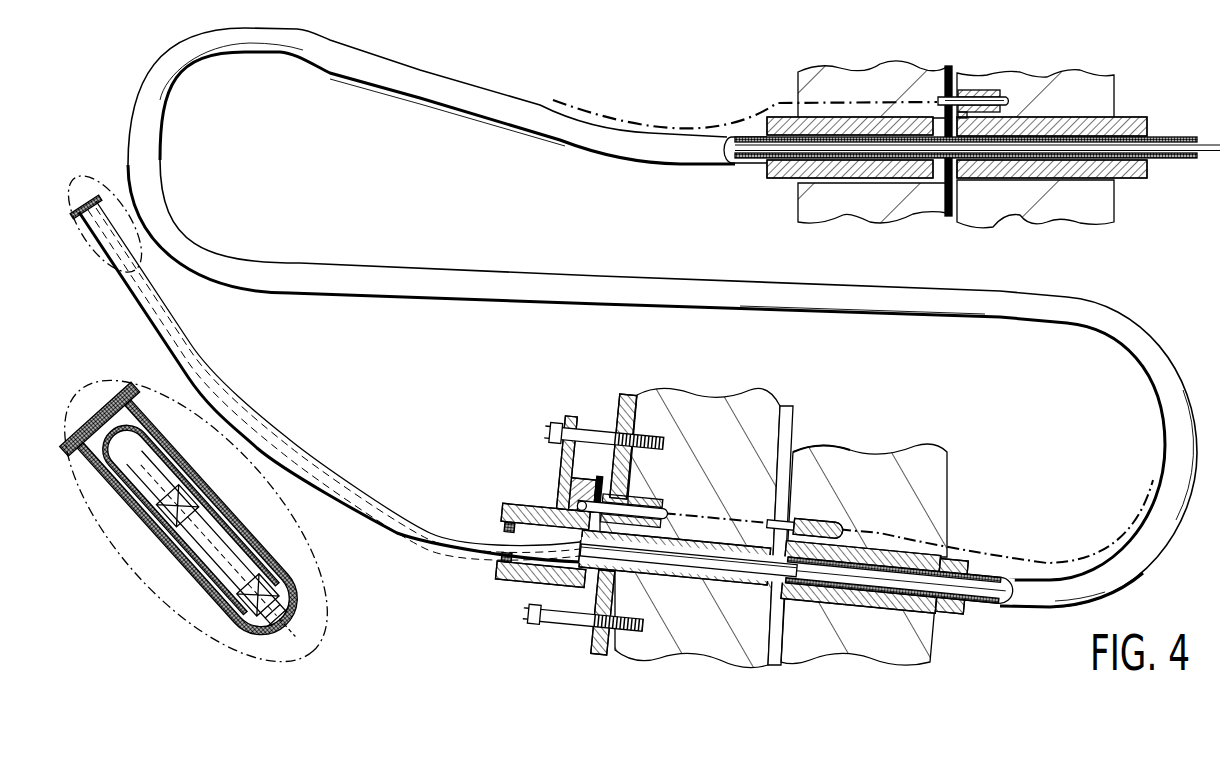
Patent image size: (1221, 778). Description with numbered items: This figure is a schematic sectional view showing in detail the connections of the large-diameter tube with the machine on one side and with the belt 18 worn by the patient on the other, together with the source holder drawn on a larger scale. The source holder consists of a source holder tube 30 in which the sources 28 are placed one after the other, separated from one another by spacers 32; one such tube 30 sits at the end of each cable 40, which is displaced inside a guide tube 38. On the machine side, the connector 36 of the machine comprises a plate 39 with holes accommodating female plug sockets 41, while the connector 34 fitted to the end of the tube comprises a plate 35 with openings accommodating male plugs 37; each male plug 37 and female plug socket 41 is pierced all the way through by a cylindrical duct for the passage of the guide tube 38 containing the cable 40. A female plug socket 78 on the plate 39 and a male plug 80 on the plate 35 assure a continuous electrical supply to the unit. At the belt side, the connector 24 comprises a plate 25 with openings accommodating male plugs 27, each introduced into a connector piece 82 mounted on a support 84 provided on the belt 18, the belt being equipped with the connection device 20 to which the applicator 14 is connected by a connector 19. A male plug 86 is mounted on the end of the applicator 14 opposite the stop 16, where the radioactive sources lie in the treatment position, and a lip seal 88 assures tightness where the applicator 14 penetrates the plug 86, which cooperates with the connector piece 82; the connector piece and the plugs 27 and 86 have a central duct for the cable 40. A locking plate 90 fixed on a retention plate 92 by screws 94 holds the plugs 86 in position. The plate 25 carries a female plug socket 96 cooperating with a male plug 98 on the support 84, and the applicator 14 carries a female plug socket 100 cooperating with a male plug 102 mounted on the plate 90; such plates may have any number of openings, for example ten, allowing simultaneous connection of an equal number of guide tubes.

The applicator 14 is at (240, 400).
The stop 16 is at (90, 195).
The belt 18 is at (693, 406).
The connector 19 is at (554, 464).
The connection device 20 is at (803, 418).
The connector 24 is at (928, 448).
The plate 25 is at (948, 460).
The male plug 27 is at (987, 553).
The source 28 is at (272, 563).
The source holder tube 30 is at (146, 403).
The spacer 32 is at (182, 548).
The connector 34 is at (799, 74).
The plate 35 is at (813, 206).
The connector 36 is at (1120, 85).
The male plug 37 is at (765, 173).
The guide tube 38 is at (486, 85).
The plate 39 is at (1102, 214).
The cable 40 is at (747, 150).
The female plug socket 41 is at (1148, 172).
The female plug socket 78 is at (1012, 96).
The male plug 80 is at (946, 78).
The connector piece 82 is at (687, 578).
The support 84 is at (792, 412).
The male plug 86 is at (528, 503).
The lip seal 88 is at (498, 562).
The locking plate 90 is at (571, 425).
The retention plate 92 is at (592, 644).
The screw 94 is at (658, 440).
The female plug socket 96 is at (806, 455).
The male plug 98 is at (823, 513).
The female plug socket 100 is at (665, 492).
The male plug 102 is at (663, 508).